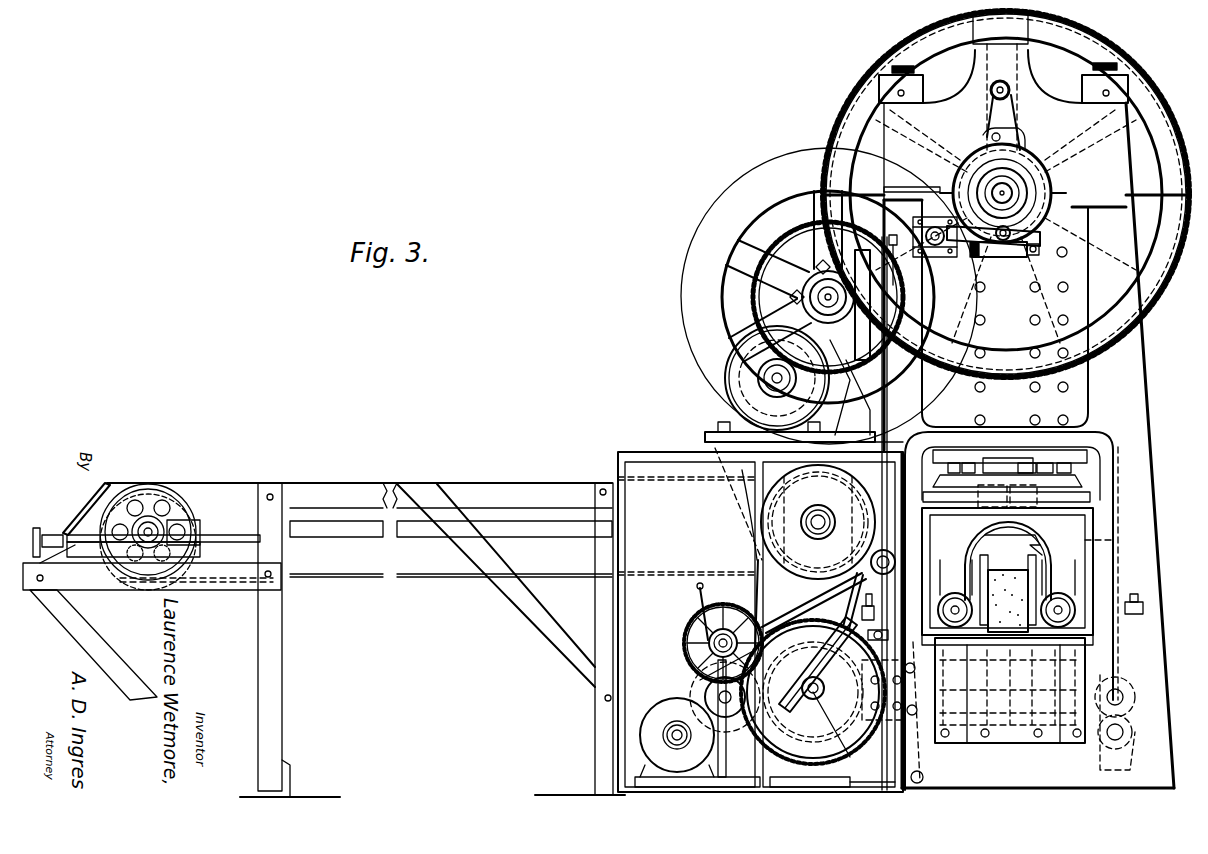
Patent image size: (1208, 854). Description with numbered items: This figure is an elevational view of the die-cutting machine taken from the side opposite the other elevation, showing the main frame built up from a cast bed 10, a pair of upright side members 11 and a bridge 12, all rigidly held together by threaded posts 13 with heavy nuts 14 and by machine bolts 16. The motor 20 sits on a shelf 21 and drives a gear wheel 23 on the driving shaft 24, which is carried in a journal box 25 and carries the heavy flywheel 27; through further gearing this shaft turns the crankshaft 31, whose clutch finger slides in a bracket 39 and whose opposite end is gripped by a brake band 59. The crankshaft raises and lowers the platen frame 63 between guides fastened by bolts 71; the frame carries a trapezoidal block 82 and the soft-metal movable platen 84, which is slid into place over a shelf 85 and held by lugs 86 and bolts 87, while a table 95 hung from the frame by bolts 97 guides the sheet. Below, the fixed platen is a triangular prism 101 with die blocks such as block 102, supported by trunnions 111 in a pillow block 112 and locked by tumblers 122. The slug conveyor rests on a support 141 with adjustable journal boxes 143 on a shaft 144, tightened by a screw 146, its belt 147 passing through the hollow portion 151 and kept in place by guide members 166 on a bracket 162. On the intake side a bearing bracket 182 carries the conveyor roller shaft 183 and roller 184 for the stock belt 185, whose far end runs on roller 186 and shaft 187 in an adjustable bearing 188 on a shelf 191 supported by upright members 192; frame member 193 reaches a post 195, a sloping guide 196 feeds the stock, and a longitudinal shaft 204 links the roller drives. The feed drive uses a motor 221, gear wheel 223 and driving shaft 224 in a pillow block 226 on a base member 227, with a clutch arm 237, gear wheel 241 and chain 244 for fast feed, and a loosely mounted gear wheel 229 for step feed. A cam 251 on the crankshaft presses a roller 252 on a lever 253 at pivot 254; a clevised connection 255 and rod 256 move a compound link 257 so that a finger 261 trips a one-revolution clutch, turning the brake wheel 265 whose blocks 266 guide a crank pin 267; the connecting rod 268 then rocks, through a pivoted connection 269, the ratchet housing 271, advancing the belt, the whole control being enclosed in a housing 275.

The bed 10 is at (1017, 772).
The upright side members 11 is at (1038, 495).
The bridge 12 is at (1020, 33).
The threaded posts 13 is at (1004, 67).
The heavy nuts 14 is at (916, 88).
The machine bolts 16 is at (1134, 596).
The motor 20 is at (777, 378).
The shelf 21 is at (705, 436).
The gear wheel 23 is at (788, 246).
The driving shaft 24 is at (812, 288).
The journal box 25 is at (858, 342).
The flywheel 27 is at (690, 257).
The crankshaft 31 is at (996, 192).
The bracket 39 is at (900, 55).
The brake band 59 is at (980, 150).
The platen frame 63 is at (1060, 452).
The bolts 71 is at (1038, 290).
The trapezoidal block 82 is at (985, 462).
The movable platen 84 is at (1028, 462).
The shelf 85 is at (1090, 497).
The lugs 86 is at (965, 462).
The bolts 87 is at (950, 462).
The table 95 is at (1075, 481).
The bolts 97 is at (1072, 458).
The triangular prism 101 is at (1007, 571).
The die block 102 is at (1027, 538).
The trunnions 111 is at (1008, 560).
The pillow block 112 is at (1040, 568).
The tumblers 122 is at (1007, 689).
The support 141 is at (1080, 666).
The journal boxes 143 is at (1040, 590).
The shaft 144 is at (985, 645).
The screw 146 is at (1126, 703).
The conveyor belt 147 is at (1008, 592).
The hollow portion 151 is at (1025, 555).
The bracket 162 is at (1008, 581).
The guide members 166 is at (1070, 580).
The bearing bracket 182 is at (848, 387).
The conveyor roller shaft 183 is at (818, 522).
The conveyor roller 184 is at (768, 508).
The conveyor belt 185 is at (350, 576).
The conveyor roller 186 is at (185, 500).
The shaft 187 is at (185, 548).
The bearing 188 is at (160, 530).
The shelf 191 is at (120, 590).
The upright members 192 is at (258, 626).
The frame member 193 is at (359, 495).
The post 195 is at (596, 721).
The sloping guide 196 is at (83, 507).
The shaft 204 is at (430, 528).
The motor 221 is at (662, 712).
The gear wheel 223 is at (692, 680).
The driving shaft 224 is at (823, 727).
The pillow block 226 is at (742, 723).
The base member 227 is at (875, 774).
The gear wheel 229 is at (812, 622).
The arm 237 is at (700, 596).
The gear wheel 241 is at (688, 630).
The chain 244 is at (750, 555).
The cam 251 is at (1020, 178).
The roller 252 is at (1040, 238).
The lever 253 is at (990, 257).
The pivot 254 is at (945, 255).
The clevised connection 255 is at (905, 225).
The rod 256 is at (887, 412).
The compound link 257 is at (882, 671).
The finger 261 is at (886, 737).
The brake wheel 265 is at (848, 738).
The blocks 266 is at (822, 652).
The crank pin 267 is at (806, 683).
The connecting rod 268 is at (858, 585).
The pivoted connection 269 is at (828, 591).
The ratchet housing 271 is at (755, 528).
The housing 275 is at (636, 458).